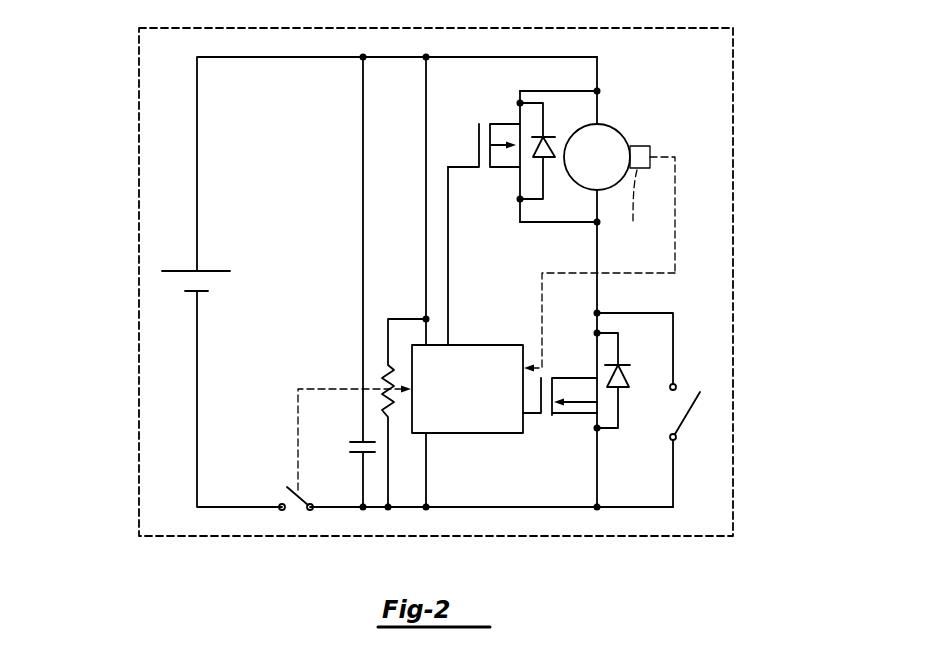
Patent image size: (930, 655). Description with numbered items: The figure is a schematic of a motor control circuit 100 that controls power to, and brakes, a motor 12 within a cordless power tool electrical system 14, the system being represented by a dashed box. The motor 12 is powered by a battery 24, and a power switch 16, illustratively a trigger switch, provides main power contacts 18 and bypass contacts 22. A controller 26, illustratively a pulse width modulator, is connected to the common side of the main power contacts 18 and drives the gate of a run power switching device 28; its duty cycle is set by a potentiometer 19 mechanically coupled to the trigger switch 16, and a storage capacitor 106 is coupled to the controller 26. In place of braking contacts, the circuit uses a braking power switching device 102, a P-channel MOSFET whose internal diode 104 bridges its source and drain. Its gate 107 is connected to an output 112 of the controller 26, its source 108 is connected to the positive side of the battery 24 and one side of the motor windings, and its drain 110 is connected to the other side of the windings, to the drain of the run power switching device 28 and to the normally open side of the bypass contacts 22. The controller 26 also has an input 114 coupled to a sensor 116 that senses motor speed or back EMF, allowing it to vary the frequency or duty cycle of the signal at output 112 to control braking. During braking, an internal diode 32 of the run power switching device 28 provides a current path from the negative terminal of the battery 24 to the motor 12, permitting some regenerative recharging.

The motor 12 is at (610, 125).
The cordless power tool electrical system 14 is at (733, 72).
The power switch 16 is at (312, 482).
The main power contacts 18 is at (298, 512).
The potentiometer 19 is at (390, 377).
The bypass contacts 22 is at (688, 413).
The battery 24 is at (262, 273).
The controller 26 is at (488, 433).
The run power switching device 28 is at (577, 378).
The internal diode of run power switching device 32 is at (630, 375).
The motor control circuit 100 is at (161, 355).
The braking power switching device 102 is at (479, 109).
The internal diode 104 is at (547, 157).
The storage capacitor 106 is at (362, 435).
The gate 107 is at (479, 145).
The source 108 is at (520, 103).
The drain 110 is at (518, 167).
The output 112 is at (437, 347).
The input 114 is at (532, 362).
The sensor 116 is at (648, 209).